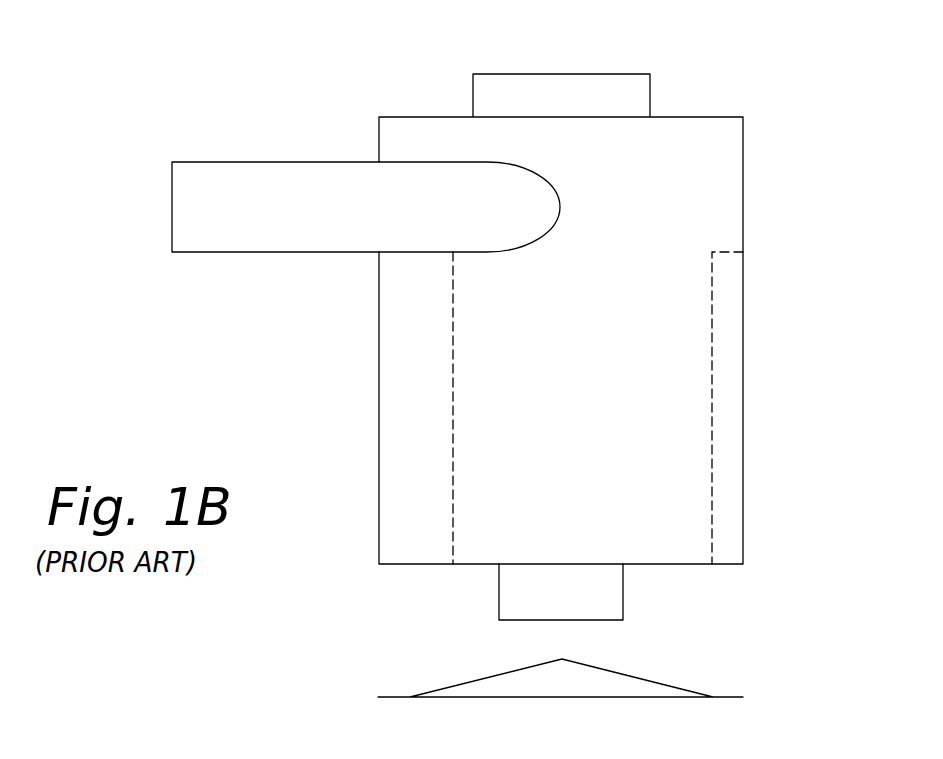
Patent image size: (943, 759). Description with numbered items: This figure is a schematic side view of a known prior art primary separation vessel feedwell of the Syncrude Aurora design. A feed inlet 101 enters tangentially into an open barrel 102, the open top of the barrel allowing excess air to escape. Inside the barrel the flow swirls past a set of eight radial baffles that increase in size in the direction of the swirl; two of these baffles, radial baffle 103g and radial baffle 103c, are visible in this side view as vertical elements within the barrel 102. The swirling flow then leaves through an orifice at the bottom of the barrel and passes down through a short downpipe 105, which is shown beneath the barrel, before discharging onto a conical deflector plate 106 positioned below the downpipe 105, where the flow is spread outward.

The feed inlet 101 is at (211, 162).
The open barrel 102 is at (743, 183).
The radial baffle 103g is at (379, 400).
The radial baffle 103c is at (738, 400).
The downpipe 105 is at (499, 600).
The conical deflector plate 106 is at (470, 680).